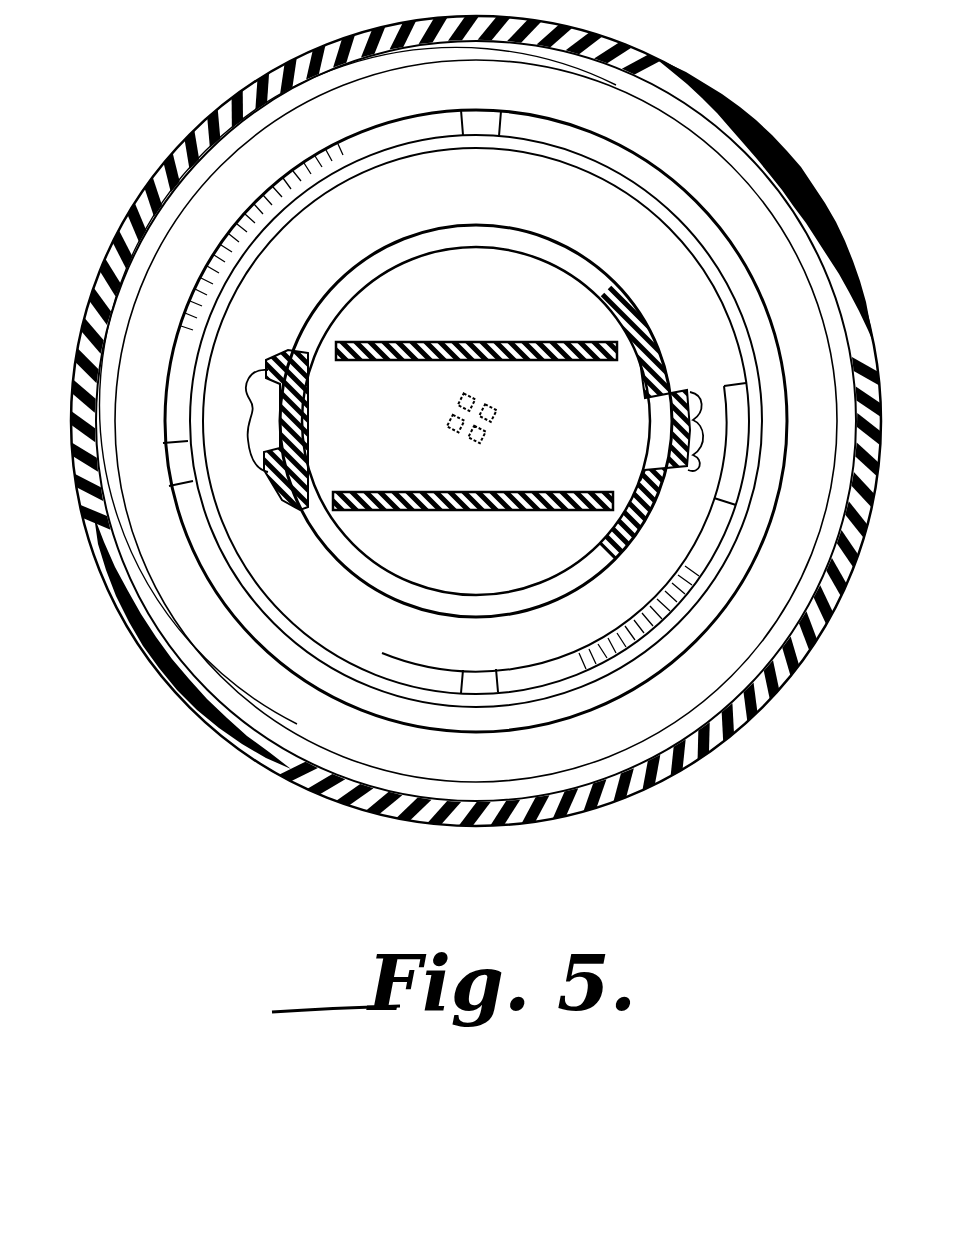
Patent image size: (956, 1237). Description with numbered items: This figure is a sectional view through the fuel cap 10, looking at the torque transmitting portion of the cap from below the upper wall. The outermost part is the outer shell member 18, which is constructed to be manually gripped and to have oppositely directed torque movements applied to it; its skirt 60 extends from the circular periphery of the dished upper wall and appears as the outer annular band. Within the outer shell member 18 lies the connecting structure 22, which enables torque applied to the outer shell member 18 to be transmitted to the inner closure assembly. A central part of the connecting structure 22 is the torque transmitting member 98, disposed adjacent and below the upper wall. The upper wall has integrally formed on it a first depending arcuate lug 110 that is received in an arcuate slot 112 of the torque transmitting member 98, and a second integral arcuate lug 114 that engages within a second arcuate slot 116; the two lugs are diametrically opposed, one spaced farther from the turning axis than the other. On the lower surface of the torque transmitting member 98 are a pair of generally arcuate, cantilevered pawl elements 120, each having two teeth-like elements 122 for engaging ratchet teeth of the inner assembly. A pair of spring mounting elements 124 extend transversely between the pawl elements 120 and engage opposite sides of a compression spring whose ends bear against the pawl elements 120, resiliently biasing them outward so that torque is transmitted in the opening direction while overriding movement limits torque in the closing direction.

The fuel cap 10 is at (806, 152).
The outer shell member 18 is at (126, 186).
The connecting structure 22 is at (838, 262).
The skirt 60 is at (102, 553).
The torque transmitting member 98 is at (263, 702).
The first depending arcuate lug 110 is at (527, 670).
The arcuate slot 112 is at (653, 592).
The second integral arcuate lug 114 is at (417, 133).
The second arcuate slot 116 is at (252, 222).
The depending pawl elements 120 is at (298, 430).
The teeth-like elements 122 is at (250, 436).
The spring mounting elements 124 is at (521, 340).